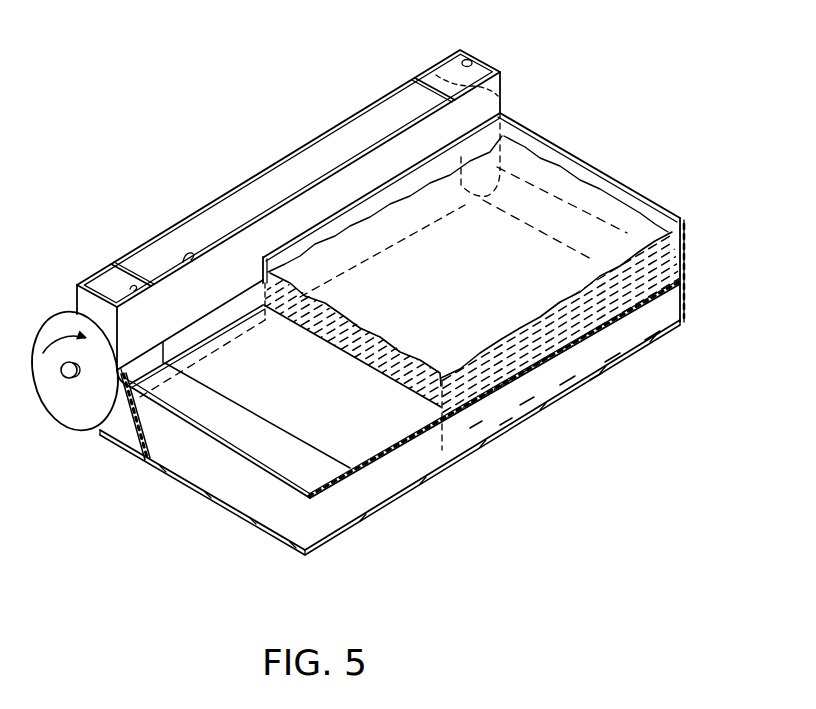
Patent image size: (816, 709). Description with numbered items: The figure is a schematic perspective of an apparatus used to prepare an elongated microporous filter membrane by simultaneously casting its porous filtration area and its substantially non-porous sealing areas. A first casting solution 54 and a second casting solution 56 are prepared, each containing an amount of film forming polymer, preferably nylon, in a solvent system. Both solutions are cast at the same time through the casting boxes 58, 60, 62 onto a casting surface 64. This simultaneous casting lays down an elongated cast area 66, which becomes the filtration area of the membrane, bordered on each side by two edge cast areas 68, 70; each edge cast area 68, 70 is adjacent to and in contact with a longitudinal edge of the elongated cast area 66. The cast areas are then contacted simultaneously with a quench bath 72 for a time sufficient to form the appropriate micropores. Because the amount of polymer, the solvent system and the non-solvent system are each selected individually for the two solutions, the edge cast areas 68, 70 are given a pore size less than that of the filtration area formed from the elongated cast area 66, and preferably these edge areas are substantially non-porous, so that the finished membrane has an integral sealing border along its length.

The first casting solution 54 is at (300, 148).
The second casting solution 56 is at (113, 280).
The casting box 58 is at (137, 289).
The casting box 60 is at (197, 259).
The casting box 62 is at (474, 62).
The casting surface 64 is at (72, 311).
The elongated cast area 66 is at (260, 397).
The edge cast area 68 is at (272, 458).
The edge cast area 70 is at (620, 186).
The quench bath 72 is at (420, 395).